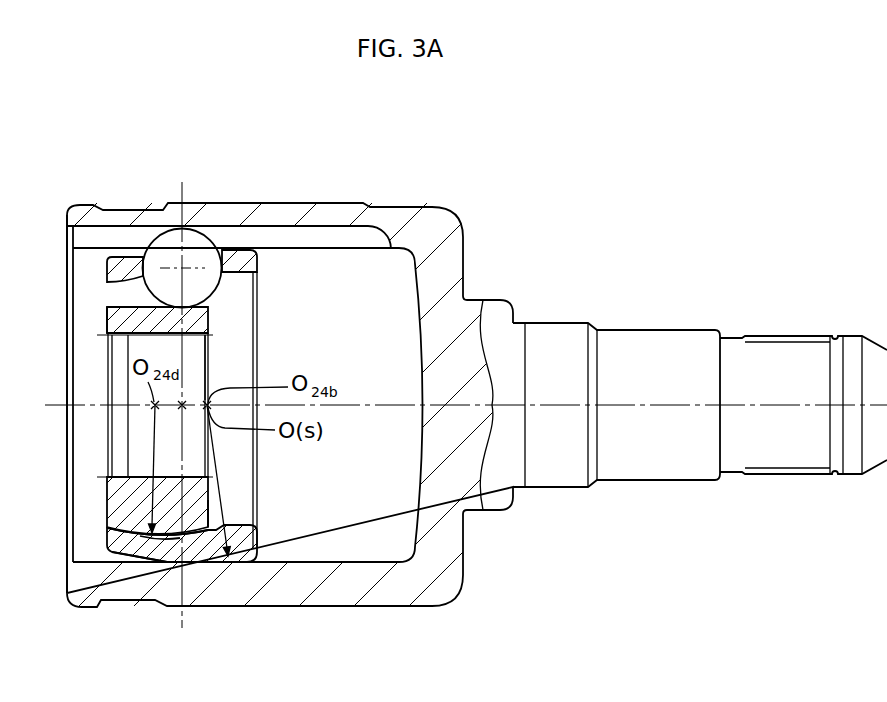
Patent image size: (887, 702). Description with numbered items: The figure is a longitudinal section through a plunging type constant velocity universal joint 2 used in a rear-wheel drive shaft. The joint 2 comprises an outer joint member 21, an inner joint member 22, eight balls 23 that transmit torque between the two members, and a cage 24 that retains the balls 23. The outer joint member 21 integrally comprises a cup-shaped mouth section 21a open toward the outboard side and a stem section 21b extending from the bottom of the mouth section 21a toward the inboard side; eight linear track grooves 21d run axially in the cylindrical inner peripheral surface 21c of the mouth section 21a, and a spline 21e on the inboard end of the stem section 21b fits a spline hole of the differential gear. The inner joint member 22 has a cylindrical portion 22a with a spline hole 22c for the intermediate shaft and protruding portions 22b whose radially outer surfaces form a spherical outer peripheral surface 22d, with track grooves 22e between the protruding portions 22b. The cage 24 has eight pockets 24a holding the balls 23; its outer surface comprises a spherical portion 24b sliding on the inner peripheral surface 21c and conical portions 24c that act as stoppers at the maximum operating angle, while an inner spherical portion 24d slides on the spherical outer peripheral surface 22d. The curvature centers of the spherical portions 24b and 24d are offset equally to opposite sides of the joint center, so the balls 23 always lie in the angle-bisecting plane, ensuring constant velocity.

The plunging type constant velocity universal joint 2 is at (436, 167).
The outer joint member 21 is at (293, 200).
The mouth section 21a is at (337, 215).
The stem section 21b is at (651, 343).
The cylindrical inner peripheral surface 21c is at (342, 552).
The track grooves 21d is at (283, 237).
The spline 21e is at (788, 338).
The inner joint member 22 is at (138, 518).
The cylindrical portion 22a is at (192, 318).
The protruding portions 22b is at (198, 520).
The spline hole 22c is at (192, 337).
The spherical outer peripheral surface 22d is at (168, 545).
The track grooves 22e is at (130, 305).
The balls 23 is at (200, 250).
The cage 24 is at (266, 550).
The pockets 24a is at (165, 260).
The spherical portion 24b is at (203, 565).
The conical portions 24c is at (121, 563).
The spherical portion 24d is at (112, 527).